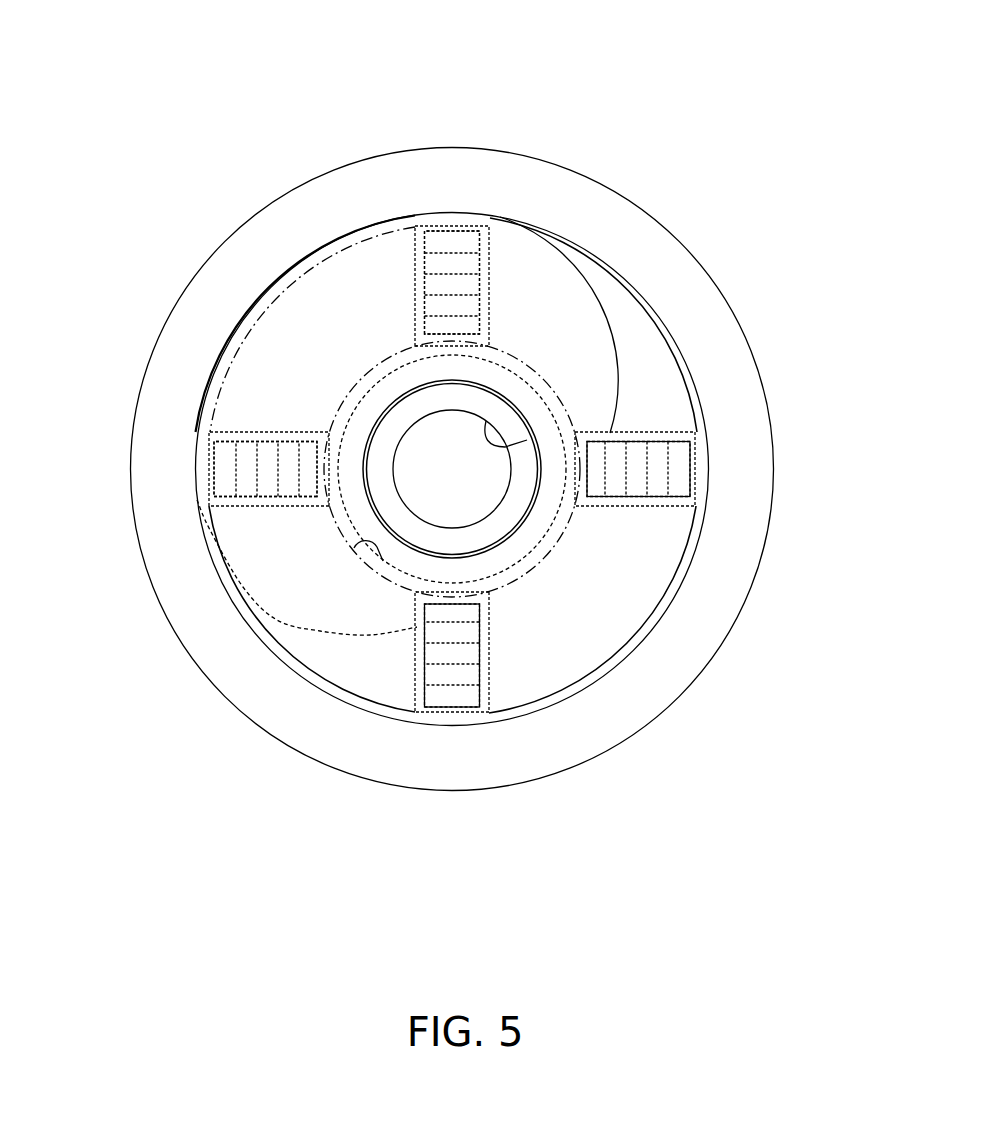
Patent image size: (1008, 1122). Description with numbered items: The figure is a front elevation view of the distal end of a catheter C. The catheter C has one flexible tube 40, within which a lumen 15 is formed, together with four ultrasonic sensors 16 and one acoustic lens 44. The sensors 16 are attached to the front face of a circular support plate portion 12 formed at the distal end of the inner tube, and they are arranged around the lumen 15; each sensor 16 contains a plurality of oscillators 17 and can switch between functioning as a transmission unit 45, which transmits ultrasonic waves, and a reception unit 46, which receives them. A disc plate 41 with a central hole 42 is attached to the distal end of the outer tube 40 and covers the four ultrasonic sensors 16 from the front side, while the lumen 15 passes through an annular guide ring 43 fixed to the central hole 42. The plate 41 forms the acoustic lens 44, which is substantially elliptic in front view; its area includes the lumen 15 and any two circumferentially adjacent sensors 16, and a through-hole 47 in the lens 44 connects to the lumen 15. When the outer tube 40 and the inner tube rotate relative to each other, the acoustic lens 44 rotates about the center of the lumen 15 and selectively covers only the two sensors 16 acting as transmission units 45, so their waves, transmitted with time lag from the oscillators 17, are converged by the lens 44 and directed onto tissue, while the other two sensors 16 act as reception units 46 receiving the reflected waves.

The support plate portion 12 is at (660, 400).
The lumen 15 is at (508, 518).
The ultrasonic sensor 16 is at (506, 284).
The oscillator 17 is at (458, 268).
The tube 40 is at (757, 243).
The disc plate 41 is at (640, 582).
The central hole 42 is at (350, 543).
The guide ring 43 is at (382, 400).
The acoustic lens 44 is at (363, 297).
The transmission unit 45 is at (508, 287).
The reception unit 46 is at (672, 421).
The through-hole 47 is at (488, 419).
The catheter C is at (699, 92).